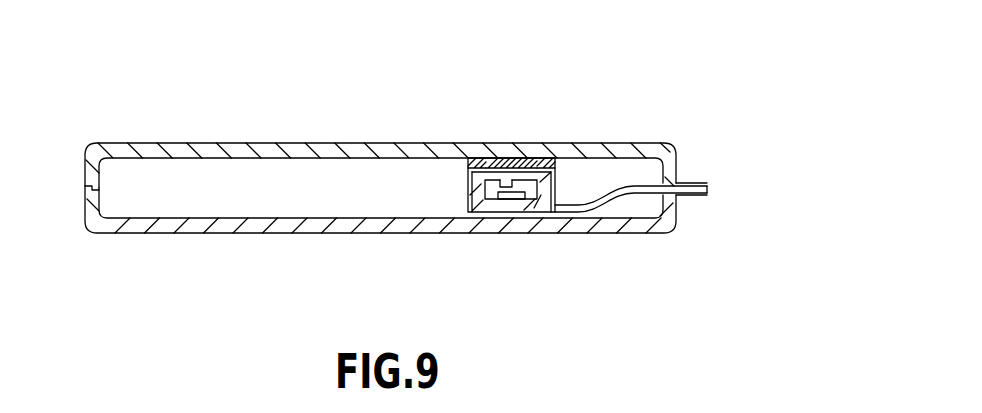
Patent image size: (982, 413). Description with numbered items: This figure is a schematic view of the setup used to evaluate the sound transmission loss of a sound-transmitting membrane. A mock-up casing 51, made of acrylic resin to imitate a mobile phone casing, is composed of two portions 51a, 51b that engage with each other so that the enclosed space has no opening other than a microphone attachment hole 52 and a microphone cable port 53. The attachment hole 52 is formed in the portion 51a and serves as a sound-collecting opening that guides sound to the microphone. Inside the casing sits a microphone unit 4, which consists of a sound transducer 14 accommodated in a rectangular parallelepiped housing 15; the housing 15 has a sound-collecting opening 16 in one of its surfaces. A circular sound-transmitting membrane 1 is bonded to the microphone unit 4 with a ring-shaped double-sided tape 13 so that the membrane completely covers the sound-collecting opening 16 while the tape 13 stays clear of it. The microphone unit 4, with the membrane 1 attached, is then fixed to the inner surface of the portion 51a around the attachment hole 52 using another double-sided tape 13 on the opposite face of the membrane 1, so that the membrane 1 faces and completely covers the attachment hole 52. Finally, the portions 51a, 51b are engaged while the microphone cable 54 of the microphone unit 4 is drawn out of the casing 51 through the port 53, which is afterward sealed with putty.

The mock-up casing 51 is at (119, 141).
The portion 51a is at (300, 143).
The portion 51b is at (283, 233).
The sound-transmitting membrane 1 is at (531, 158).
The double-sided tape 13 is at (478, 158).
The microphone attachment hole 52 is at (512, 158).
The microphone unit 4 is at (469, 198).
The housing 15 is at (482, 200).
The sound transducer 14 is at (513, 192).
The sound-collecting opening 16 is at (522, 200).
The microphone cable port 53 is at (678, 182).
The microphone cable 54 is at (692, 194).